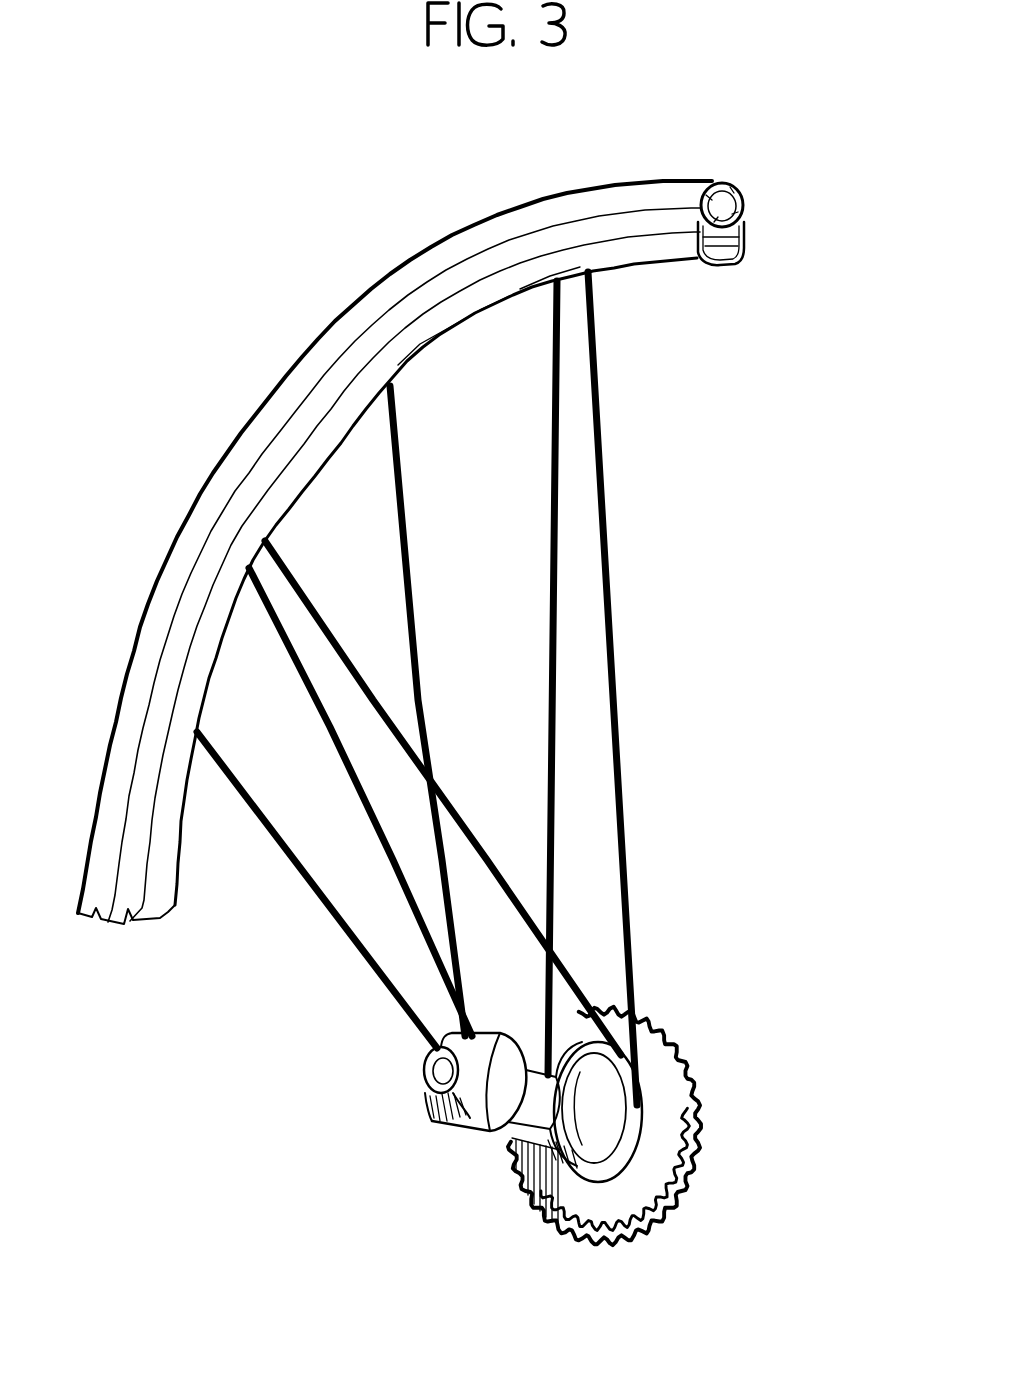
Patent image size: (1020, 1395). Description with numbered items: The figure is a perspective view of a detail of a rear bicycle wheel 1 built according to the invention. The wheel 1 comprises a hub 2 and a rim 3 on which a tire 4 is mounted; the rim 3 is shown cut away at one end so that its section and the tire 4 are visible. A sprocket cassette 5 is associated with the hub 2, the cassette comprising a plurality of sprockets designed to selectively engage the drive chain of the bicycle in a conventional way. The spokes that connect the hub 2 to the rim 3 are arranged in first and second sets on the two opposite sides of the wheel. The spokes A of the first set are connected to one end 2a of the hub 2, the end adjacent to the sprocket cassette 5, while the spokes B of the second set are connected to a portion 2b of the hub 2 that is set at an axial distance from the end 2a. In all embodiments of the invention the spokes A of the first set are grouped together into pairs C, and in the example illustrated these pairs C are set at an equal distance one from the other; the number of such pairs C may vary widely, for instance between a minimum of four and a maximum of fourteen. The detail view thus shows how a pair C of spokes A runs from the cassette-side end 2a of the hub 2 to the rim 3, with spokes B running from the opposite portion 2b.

The bicycle wheel 1 is at (186, 300).
The hub 2 is at (492, 1148).
The end of the hub 2a is at (596, 1247).
The portion of the hub 2b is at (440, 1122).
The rim 3 is at (668, 274).
The tire 4 is at (670, 195).
The sprocket cassette 5 is at (708, 1082).
The spokes of the first set A is at (617, 755).
The spokes of the second set B is at (412, 584).
The pairs of spokes C is at (368, 658).